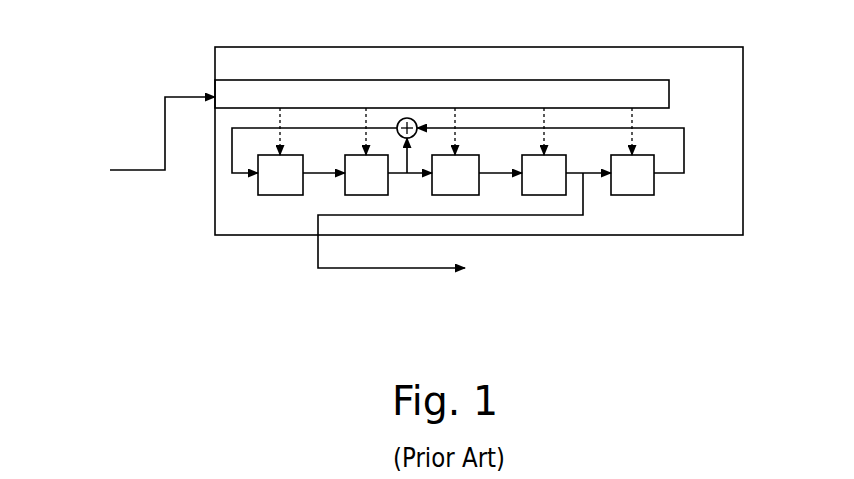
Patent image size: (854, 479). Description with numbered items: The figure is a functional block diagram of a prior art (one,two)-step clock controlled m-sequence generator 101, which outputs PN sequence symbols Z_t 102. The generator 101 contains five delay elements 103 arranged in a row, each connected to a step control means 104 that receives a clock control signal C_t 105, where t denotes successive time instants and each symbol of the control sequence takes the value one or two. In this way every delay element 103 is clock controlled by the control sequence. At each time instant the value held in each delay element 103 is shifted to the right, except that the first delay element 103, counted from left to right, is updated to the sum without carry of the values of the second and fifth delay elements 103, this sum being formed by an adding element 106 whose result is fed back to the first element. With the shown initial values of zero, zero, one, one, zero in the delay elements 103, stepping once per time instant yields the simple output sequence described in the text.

The m-sequence generator 101 is at (188, 282).
The PN sequence symbols Z_t 102 is at (402, 273).
The delay elements 103 is at (258, 195).
The step control means 104 is at (383, 73).
The clock control signal C_t 105 is at (152, 117).
The adding element 106 is at (410, 123).